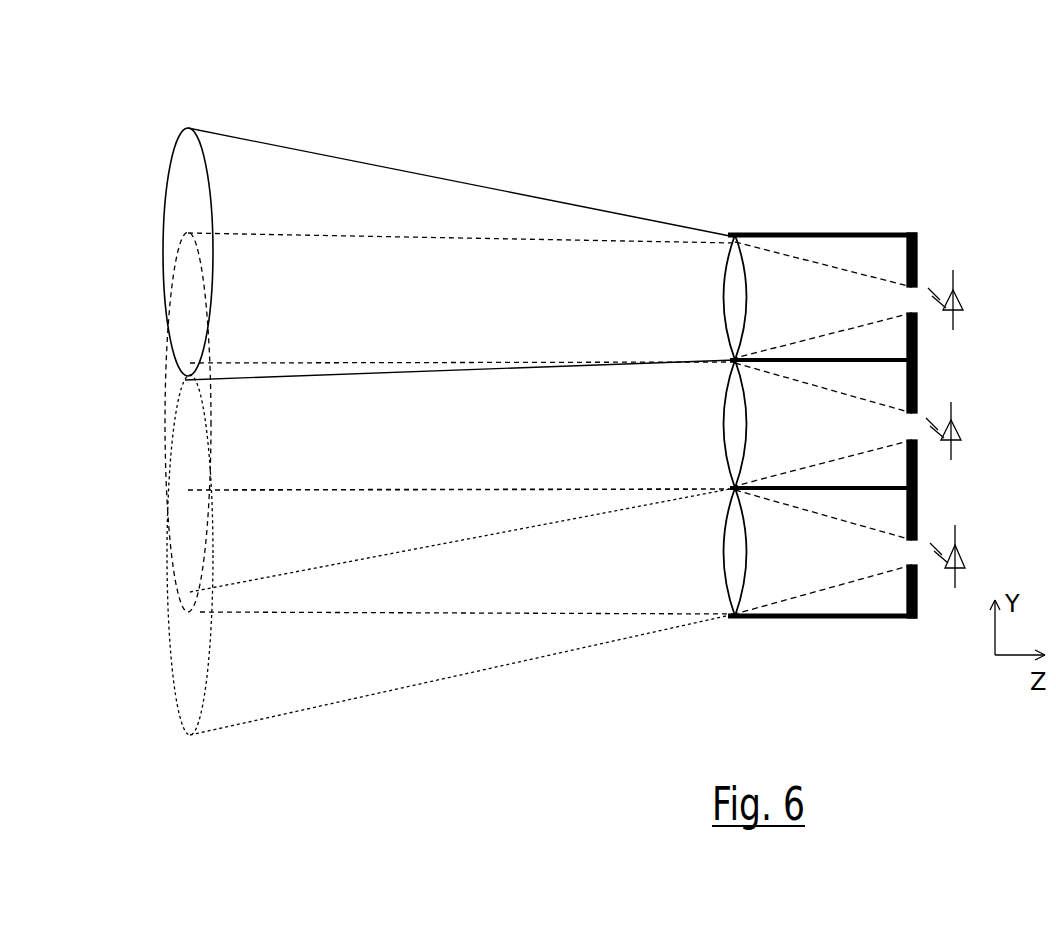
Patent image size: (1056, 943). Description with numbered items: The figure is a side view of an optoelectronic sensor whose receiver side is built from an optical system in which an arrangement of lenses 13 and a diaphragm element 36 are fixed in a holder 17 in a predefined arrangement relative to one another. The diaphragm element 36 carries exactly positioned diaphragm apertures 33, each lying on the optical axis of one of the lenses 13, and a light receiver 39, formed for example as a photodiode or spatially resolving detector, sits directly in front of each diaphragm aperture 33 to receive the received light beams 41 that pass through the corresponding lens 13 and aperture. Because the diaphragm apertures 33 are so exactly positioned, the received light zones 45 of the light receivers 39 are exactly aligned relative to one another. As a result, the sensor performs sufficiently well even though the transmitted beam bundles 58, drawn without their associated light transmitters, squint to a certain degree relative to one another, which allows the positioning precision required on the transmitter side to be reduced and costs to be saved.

The lens 13 is at (737, 290).
The holder 17 is at (845, 233).
The diaphragm aperture 33 is at (918, 282).
The diaphragm element 36 is at (918, 600).
The light receiver 39 is at (990, 270).
The received light beam 41 is at (853, 268).
The received light zone 45 is at (507, 241).
The transmitted beam bundle 58 is at (382, 165).